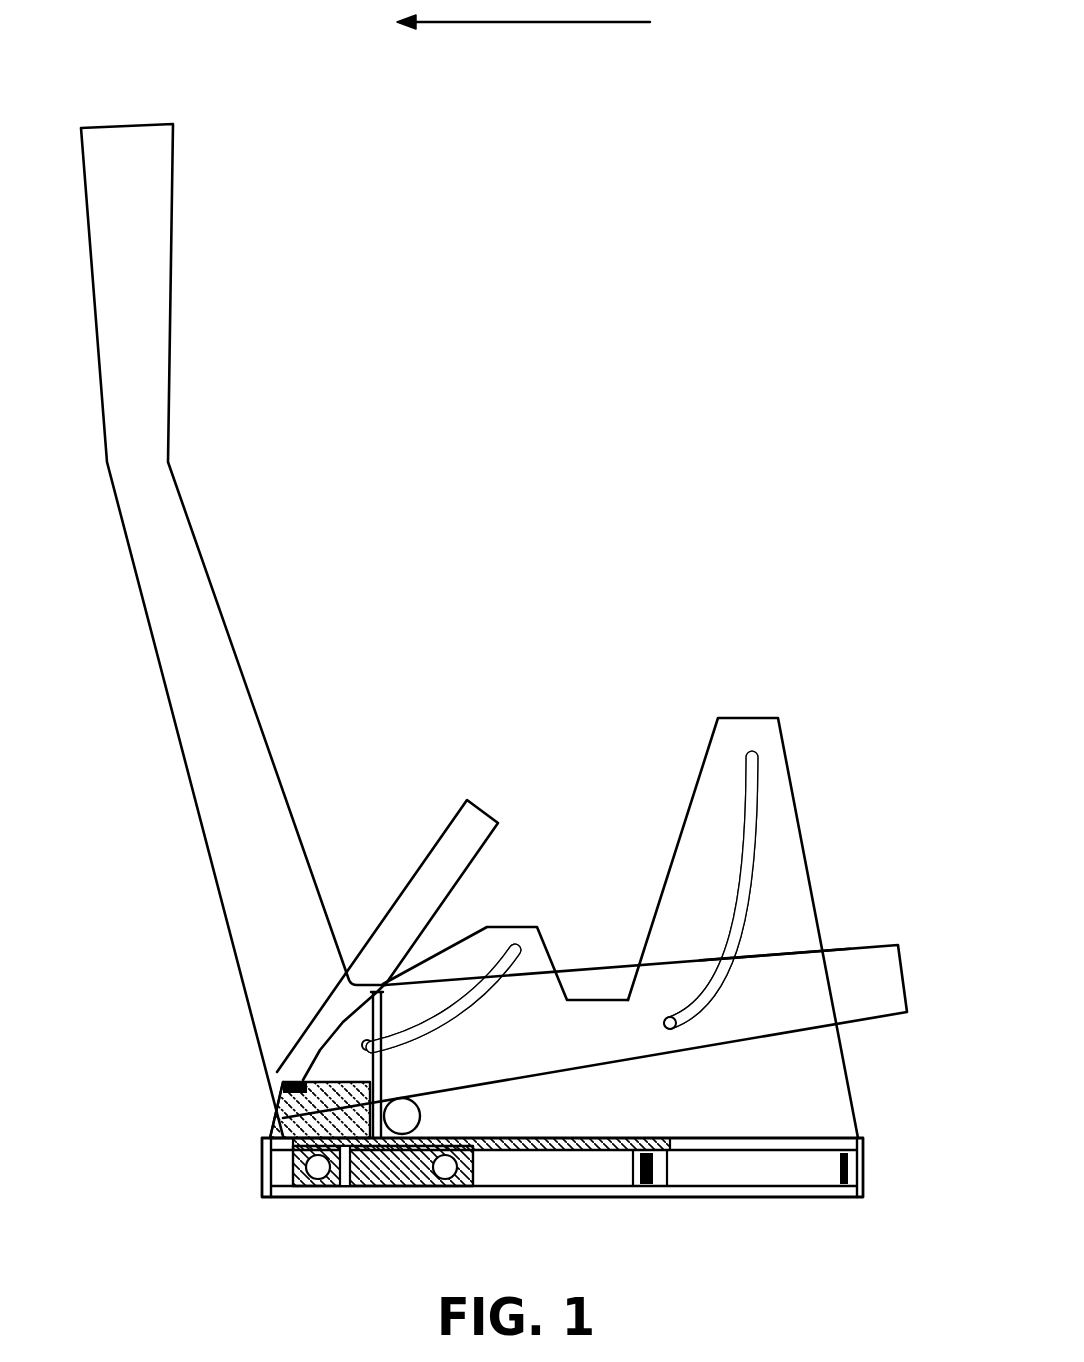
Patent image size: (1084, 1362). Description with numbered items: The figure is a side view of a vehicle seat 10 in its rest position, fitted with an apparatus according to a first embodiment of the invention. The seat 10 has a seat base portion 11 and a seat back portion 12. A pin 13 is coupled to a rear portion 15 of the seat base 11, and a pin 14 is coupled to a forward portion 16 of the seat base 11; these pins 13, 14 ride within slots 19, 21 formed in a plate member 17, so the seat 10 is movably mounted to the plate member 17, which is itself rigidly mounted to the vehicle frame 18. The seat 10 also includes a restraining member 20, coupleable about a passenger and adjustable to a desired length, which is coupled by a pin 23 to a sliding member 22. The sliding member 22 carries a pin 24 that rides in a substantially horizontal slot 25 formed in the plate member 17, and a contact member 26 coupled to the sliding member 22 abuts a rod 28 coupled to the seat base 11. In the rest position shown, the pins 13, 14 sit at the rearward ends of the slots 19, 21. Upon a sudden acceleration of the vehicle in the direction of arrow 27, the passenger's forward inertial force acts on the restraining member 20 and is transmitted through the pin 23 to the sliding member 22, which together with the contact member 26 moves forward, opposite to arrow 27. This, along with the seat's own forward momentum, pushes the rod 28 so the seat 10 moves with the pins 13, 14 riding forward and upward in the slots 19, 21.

The vehicle seat 10 is at (546, 550).
The seat base portion 11 is at (905, 943).
The seat back portion 12 is at (150, 565).
The pin 13 is at (362, 1040).
The pin 14 is at (673, 1016).
The rear portion 15 is at (442, 972).
The forward portion 16 is at (772, 952).
The plate member 17 is at (683, 903).
The vehicle frame 18 is at (802, 1197).
The slot 19 is at (479, 1000).
The restraining member 20 is at (434, 868).
The slot 21 is at (748, 852).
The sliding member 22 is at (283, 1119).
The pin 23 is at (283, 1089).
The pin 24 is at (323, 1168).
The horizontal slot 25 is at (573, 1168).
The contact member 26 is at (384, 1063).
The arrow 27 is at (498, 30).
The rod 28 is at (402, 1123).